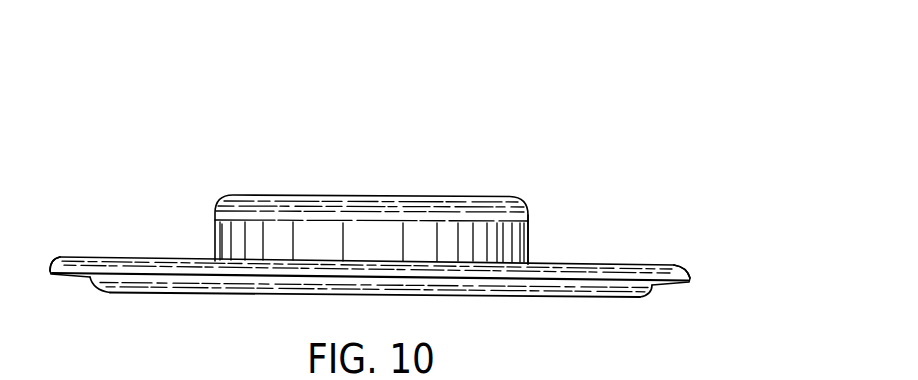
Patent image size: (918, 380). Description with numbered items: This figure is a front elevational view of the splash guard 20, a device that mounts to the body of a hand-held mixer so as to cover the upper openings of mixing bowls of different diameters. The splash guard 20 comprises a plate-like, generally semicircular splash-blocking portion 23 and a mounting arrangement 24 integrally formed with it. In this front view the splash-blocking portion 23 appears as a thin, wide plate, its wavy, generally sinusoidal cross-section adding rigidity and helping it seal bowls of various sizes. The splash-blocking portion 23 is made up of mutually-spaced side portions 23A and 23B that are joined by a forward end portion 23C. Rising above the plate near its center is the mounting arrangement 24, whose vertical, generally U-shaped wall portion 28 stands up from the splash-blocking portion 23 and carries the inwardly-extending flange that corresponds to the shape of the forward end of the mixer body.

The splash guard 20 is at (439, 254).
The splash-blocking portion 23 is at (371, 319).
The side portion 23A is at (643, 262).
The side portion 23B is at (82, 255).
The forward end portion 23C is at (472, 279).
The mounting arrangement 24 is at (548, 226).
The U-shaped wall portion 28 is at (374, 232).